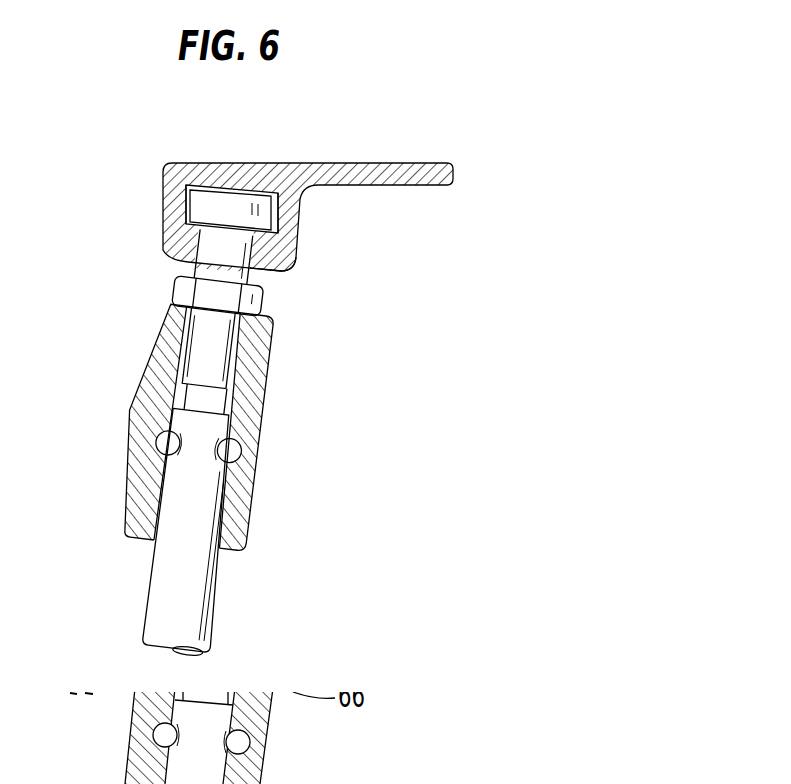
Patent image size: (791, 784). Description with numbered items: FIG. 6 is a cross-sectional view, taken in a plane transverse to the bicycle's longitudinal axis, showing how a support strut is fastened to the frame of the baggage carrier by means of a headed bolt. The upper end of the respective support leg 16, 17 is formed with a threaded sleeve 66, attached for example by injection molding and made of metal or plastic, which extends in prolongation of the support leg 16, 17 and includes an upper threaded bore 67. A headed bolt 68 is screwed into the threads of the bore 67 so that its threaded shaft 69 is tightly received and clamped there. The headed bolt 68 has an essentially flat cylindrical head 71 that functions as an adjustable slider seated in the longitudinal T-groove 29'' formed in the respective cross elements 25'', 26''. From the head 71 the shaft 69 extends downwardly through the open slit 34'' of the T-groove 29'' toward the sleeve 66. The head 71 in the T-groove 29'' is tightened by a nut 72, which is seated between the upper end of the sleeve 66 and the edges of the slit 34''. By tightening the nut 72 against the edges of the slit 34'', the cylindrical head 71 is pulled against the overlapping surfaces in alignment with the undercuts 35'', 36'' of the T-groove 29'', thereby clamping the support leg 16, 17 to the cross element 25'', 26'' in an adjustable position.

The cross element 25'' is at (337, 174).
The cross element 26'' is at (337, 174).
The longitudinal groove 29'' is at (232, 158).
The undercut 35'' is at (125, 203).
The undercut 36'' is at (303, 164).
The cylindrical head 71 is at (262, 218).
The open slit 34'' is at (316, 276).
The headed bolt 68 is at (212, 247).
The nut 72 is at (175, 285).
The threaded sleeve 66 is at (270, 393).
The threaded bore 67 is at (240, 349).
The threaded shaft 69 is at (197, 358).
The support leg 16 is at (198, 622).
The support leg 17 is at (249, 540).